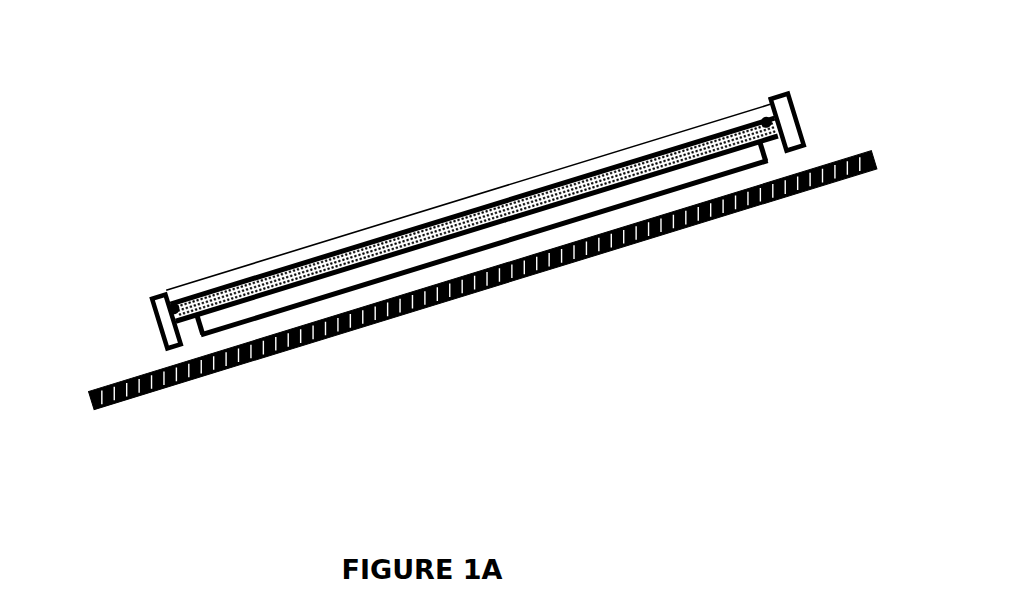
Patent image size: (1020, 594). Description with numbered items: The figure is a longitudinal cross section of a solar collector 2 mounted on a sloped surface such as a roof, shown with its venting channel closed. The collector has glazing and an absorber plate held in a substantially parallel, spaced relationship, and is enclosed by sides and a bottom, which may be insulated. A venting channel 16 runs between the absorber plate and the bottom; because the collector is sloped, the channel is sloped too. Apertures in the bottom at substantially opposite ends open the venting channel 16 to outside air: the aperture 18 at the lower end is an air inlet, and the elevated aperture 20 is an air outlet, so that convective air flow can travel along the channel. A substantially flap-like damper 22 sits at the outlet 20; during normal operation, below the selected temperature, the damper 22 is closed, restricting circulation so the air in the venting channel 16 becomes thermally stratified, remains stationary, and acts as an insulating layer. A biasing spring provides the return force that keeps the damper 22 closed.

The solar collector 2 is at (250, 207).
The venting channel 16 is at (494, 222).
The aperture 18 is at (185, 343).
The aperture 20 is at (780, 152).
The damper 22 is at (766, 142).